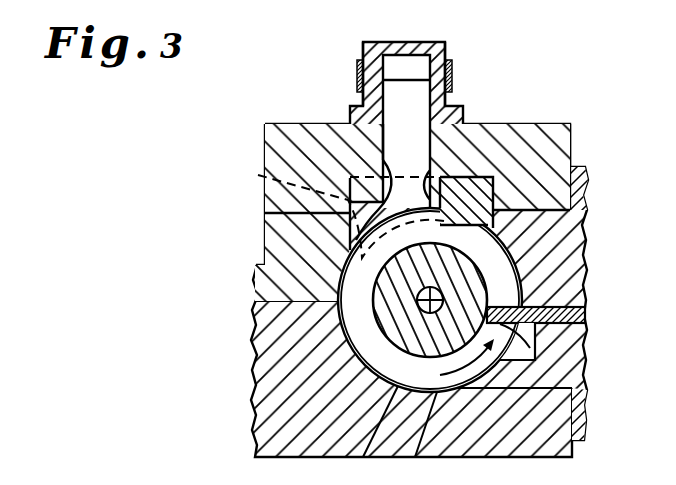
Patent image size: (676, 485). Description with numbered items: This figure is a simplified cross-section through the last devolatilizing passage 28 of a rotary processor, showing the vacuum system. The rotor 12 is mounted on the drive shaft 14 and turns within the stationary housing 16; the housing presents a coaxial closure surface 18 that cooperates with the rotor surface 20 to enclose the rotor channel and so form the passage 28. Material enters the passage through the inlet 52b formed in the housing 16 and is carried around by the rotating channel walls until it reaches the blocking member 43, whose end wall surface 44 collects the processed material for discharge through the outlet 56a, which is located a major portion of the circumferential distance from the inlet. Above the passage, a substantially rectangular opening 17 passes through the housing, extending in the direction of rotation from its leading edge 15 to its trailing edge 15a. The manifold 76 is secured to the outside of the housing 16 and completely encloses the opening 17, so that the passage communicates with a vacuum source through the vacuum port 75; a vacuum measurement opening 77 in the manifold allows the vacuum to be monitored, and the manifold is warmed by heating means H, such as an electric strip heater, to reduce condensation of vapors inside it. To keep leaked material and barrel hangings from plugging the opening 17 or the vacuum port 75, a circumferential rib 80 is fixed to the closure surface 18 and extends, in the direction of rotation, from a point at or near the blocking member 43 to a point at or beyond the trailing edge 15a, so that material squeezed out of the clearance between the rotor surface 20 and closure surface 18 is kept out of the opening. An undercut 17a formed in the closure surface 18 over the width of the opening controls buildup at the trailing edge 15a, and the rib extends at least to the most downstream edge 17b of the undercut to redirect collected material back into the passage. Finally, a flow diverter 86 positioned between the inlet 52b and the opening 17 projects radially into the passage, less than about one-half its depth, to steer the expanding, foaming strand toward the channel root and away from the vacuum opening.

The rotor 12 is at (386, 283).
The drive shaft 14 is at (440, 297).
The leading edge 15 is at (455, 127).
The trailing edge 15a is at (401, 145).
The housing 16 is at (272, 450).
The opening 17 is at (383, 157).
The undercut 17a is at (265, 213).
The most downstream edge 17b is at (350, 247).
The closure surface 18 is at (363, 457).
The rotor surface 20 is at (413, 457).
The last devolatilizing passage 28 is at (352, 334).
The blocking member 43 is at (563, 313).
The end wall surface 44 is at (535, 338).
The inlet 52b is at (587, 232).
The outlet 56a is at (526, 350).
The vacuum port 75 is at (412, 40).
The manifold 76 is at (446, 54).
The vacuum measurement opening 77 is at (370, 55).
The circumferential rib 80 is at (248, 174).
The flow diverter 86 is at (476, 215).
The heating means H is at (358, 76).